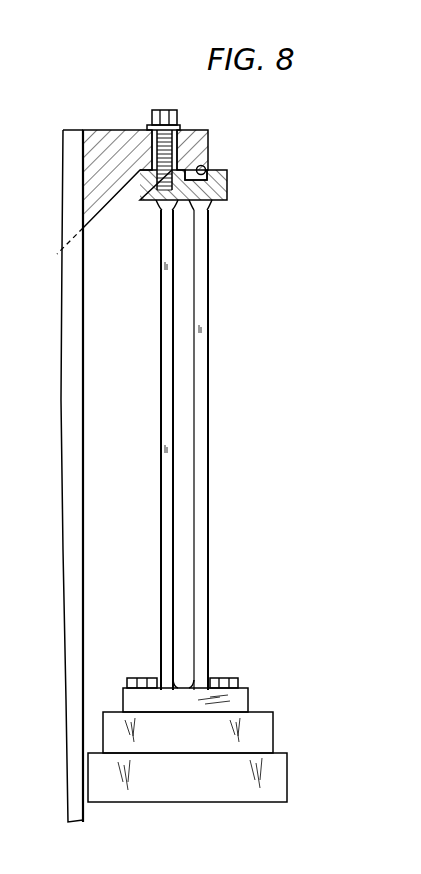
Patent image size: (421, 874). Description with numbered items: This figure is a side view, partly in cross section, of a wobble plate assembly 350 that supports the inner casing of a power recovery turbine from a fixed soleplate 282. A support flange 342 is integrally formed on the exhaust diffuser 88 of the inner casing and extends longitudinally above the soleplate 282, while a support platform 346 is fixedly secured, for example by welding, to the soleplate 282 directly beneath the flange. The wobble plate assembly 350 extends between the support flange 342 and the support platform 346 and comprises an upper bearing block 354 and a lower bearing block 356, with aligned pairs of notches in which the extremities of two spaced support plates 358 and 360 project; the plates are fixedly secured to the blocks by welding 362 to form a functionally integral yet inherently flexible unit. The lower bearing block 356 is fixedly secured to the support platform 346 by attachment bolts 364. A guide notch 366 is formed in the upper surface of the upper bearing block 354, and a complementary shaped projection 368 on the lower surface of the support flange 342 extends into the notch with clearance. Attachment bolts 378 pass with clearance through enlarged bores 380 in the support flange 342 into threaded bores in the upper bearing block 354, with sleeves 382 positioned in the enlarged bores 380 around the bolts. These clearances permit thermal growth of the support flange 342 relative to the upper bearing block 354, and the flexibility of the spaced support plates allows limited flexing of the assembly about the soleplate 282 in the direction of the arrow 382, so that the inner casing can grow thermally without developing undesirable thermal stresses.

The exhaust diffuser 88 is at (58, 241).
The soleplate 282 is at (283, 785).
The support flange 342 is at (95, 140).
The support platform 346 is at (273, 736).
The wobble plate assembly 350 is at (212, 404).
The upper bearing block 354 is at (227, 192).
The lower bearing block 356 is at (248, 700).
The support plate 358 is at (162, 392).
The support plate 360 is at (207, 447).
The welding 362 is at (160, 201).
The attachment bolts 364 is at (238, 681).
The guide notch 366 is at (208, 172).
The projection 368 is at (204, 166).
The attachment bolts 378 is at (165, 108).
The enlarged bores 380 is at (153, 148).
The sleeves 382 is at (179, 146).